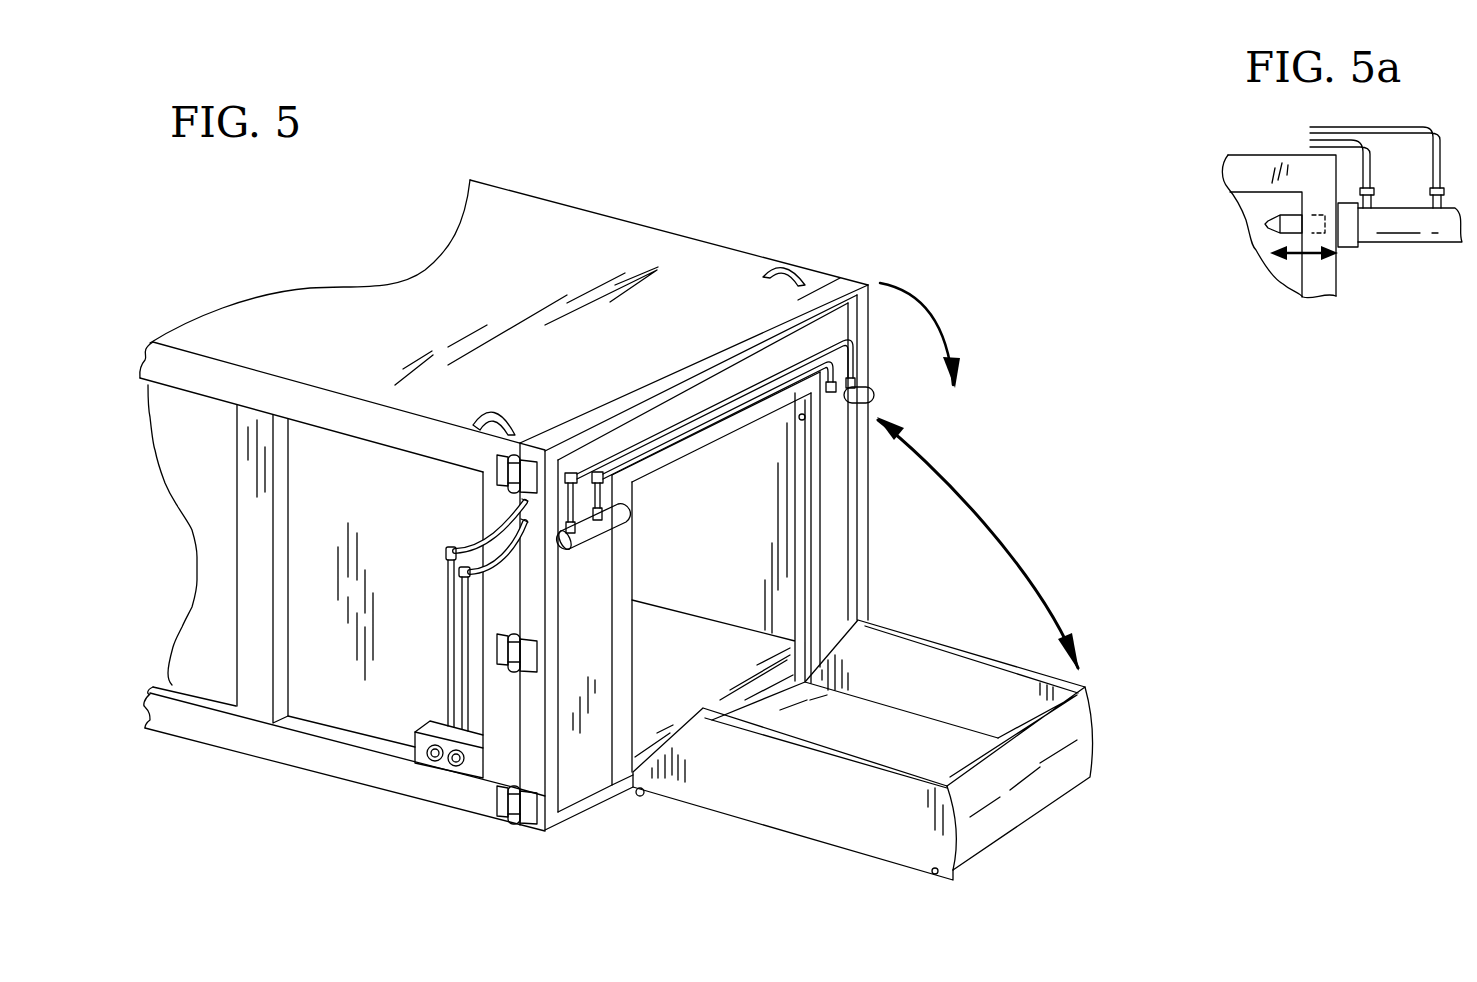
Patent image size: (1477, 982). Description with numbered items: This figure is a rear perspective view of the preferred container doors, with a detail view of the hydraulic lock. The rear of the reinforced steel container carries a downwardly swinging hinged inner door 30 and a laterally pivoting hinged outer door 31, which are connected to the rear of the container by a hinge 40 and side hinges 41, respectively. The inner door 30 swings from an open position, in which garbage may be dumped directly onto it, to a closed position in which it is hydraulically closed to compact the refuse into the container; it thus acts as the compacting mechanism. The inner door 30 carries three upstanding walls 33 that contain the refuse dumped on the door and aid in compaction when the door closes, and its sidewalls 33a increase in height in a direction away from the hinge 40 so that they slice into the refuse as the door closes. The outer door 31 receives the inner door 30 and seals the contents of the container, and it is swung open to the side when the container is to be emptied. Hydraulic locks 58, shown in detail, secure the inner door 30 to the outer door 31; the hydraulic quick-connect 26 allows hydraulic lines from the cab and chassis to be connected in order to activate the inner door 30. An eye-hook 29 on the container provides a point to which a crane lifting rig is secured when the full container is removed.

In FIG. 5, the hydraulic quick-connect 26 is at (473, 762).
In FIG. 5, the eye-hook 29 is at (770, 263).
In FIG. 5, the inner door 30 is at (913, 717).
In FIG. 5, the outer door 31 is at (583, 763).
In FIG. 5, the upstanding wall 33 is at (1067, 760).
In FIG. 5, the sidewall 33a is at (945, 678).
In FIG. 5, the hinge 40 is at (644, 794).
In FIG. 5, the side hinge 41 is at (506, 812).
In FIG. 5, the hydraulic lock 58 is at (868, 392).
In FIG. 5A, the hydraulic lock 58 is at (1393, 235).